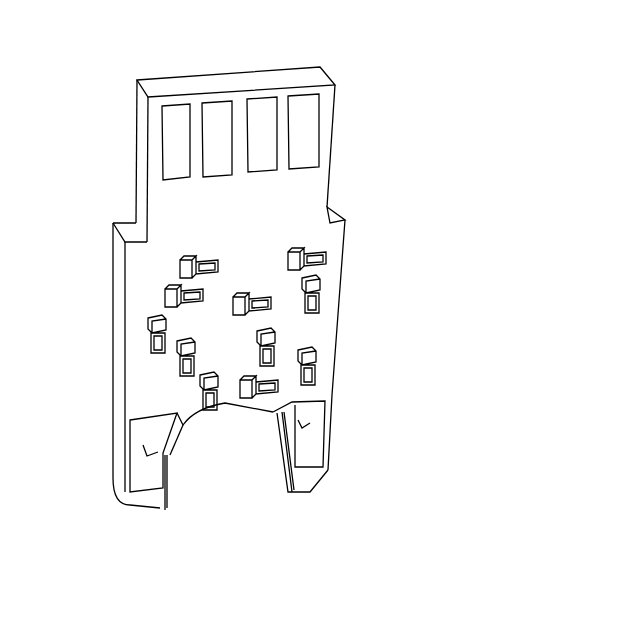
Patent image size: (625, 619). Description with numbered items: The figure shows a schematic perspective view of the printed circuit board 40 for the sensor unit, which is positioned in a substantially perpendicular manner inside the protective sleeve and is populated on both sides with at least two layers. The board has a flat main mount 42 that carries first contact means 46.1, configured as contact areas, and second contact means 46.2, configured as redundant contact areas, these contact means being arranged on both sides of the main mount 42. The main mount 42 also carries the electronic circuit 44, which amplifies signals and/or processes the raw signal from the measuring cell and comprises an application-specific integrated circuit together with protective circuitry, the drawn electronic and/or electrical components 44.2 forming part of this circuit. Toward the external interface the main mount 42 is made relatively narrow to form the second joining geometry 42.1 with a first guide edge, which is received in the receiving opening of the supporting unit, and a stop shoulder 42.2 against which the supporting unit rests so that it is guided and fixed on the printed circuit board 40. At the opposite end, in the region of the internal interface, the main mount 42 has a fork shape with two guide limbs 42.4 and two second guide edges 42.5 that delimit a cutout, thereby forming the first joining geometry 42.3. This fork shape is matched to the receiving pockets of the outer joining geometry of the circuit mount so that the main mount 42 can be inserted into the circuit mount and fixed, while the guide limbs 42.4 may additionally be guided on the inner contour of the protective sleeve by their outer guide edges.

The printed circuit board 40 is at (393, 79).
The main mount 42 is at (137, 262).
The second joining geometry 42.1 is at (335, 127).
The stop shoulder 42.2 is at (335, 212).
The first joining geometry 42.3 is at (257, 487).
The guide limbs 42.4 is at (156, 504).
The second guide edges 42.5 is at (168, 473).
The electronic circuit 44 is at (372, 227).
The electronic and/or electrical component 44.2 is at (203, 392).
The first contact means 46.1 is at (143, 455).
The second contact means 46.2 is at (300, 107).